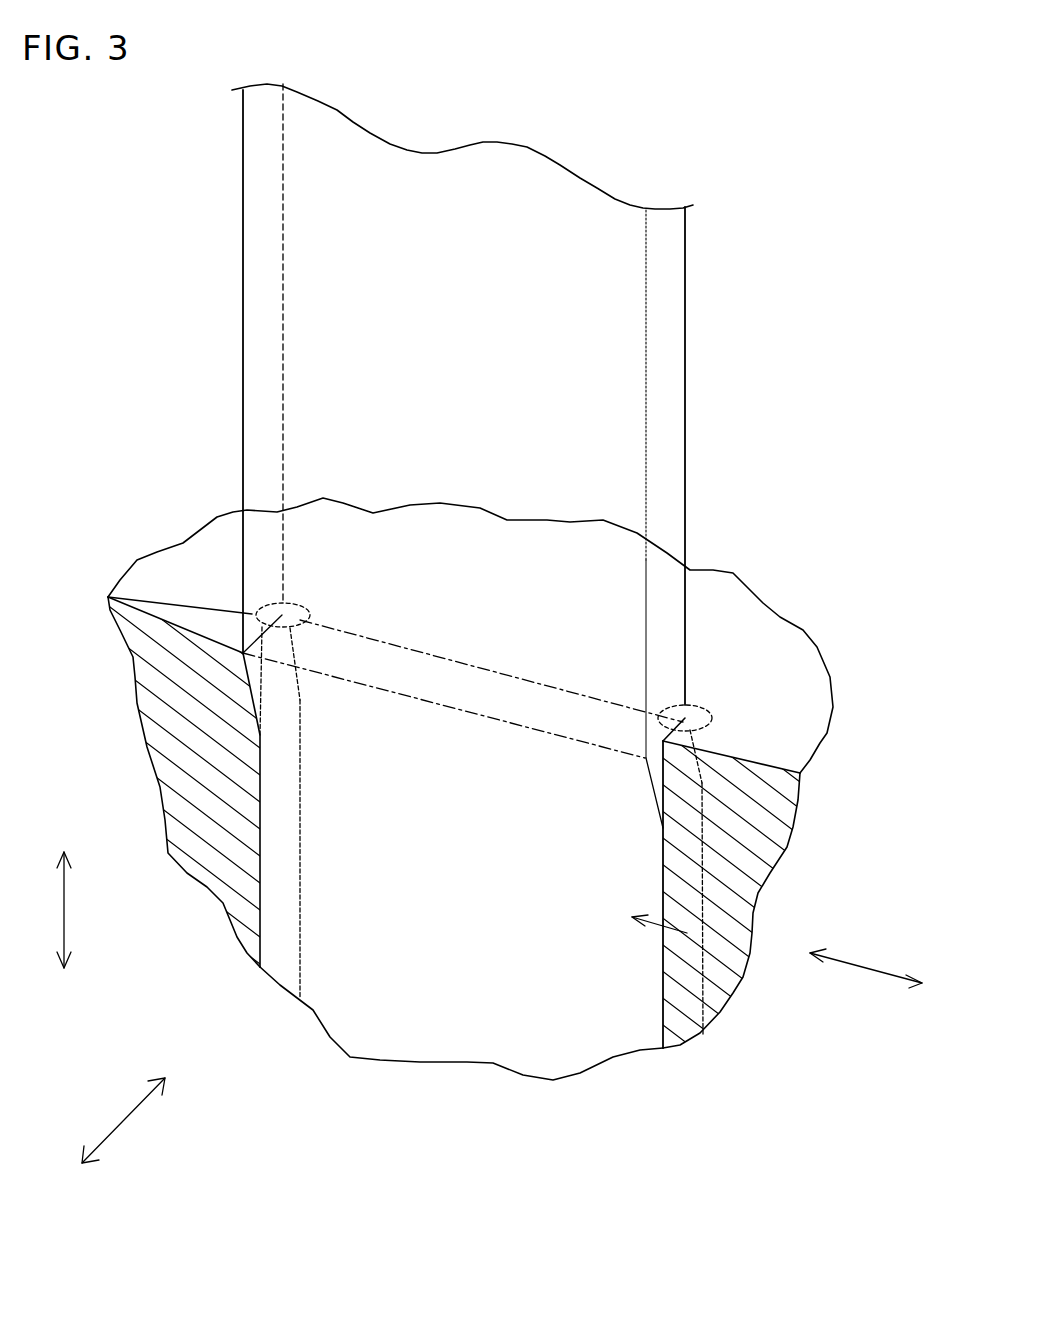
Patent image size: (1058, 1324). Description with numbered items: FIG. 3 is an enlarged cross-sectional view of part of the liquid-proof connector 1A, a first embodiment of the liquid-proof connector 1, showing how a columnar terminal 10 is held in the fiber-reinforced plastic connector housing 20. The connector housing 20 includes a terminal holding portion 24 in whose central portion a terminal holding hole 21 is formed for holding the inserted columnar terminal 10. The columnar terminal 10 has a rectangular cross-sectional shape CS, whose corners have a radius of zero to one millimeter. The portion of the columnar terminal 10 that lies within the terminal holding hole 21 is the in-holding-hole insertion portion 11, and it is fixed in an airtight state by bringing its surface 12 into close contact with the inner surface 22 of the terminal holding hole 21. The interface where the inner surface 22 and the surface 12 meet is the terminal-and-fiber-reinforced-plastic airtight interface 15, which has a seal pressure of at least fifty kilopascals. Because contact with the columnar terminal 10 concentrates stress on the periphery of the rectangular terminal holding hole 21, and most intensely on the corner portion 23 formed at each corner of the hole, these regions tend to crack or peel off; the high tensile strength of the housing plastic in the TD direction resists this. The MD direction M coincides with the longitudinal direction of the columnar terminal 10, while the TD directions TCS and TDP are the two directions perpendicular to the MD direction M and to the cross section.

The liquid-proof connector 1 is at (492, 615).
The liquid-proof connector 1A is at (780, 213).
The columnar terminal 10 is at (700, 335).
The in-holding-hole insertion portion 11 is at (727, 1000).
The surface 12 is at (437, 1012).
The terminal-and-fiber-reinforced-plastic airtight interface 15 is at (405, 675).
The connector housing 20 is at (489, 776).
The terminal holding hole 21 is at (653, 723).
The inner surface 22 is at (137, 560).
The corner portion 23 is at (272, 648).
The terminal holding portion 24 is at (800, 718).
The cross-sectional shape CS is at (340, 688).
The MD direction M is at (68, 905).
The TD direction TDP is at (115, 1120).
The TD direction TCS is at (860, 967).